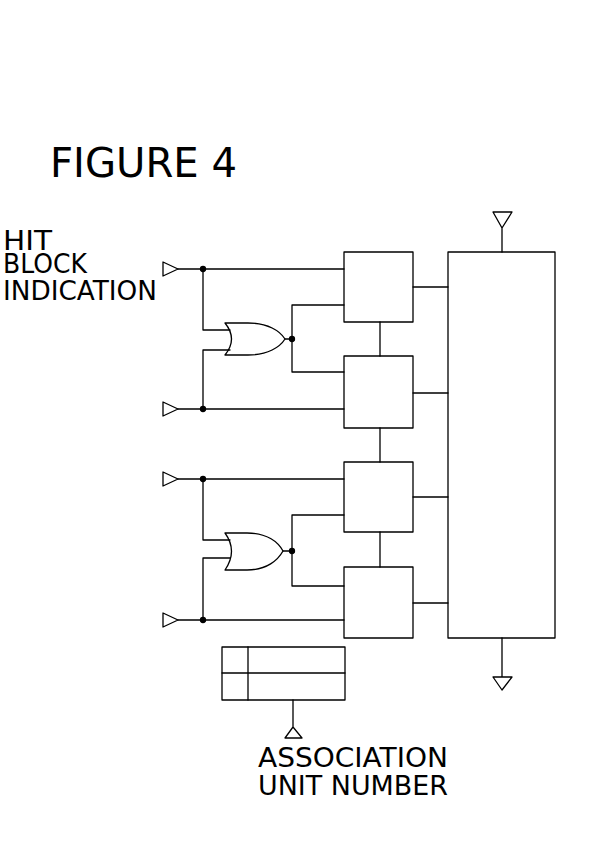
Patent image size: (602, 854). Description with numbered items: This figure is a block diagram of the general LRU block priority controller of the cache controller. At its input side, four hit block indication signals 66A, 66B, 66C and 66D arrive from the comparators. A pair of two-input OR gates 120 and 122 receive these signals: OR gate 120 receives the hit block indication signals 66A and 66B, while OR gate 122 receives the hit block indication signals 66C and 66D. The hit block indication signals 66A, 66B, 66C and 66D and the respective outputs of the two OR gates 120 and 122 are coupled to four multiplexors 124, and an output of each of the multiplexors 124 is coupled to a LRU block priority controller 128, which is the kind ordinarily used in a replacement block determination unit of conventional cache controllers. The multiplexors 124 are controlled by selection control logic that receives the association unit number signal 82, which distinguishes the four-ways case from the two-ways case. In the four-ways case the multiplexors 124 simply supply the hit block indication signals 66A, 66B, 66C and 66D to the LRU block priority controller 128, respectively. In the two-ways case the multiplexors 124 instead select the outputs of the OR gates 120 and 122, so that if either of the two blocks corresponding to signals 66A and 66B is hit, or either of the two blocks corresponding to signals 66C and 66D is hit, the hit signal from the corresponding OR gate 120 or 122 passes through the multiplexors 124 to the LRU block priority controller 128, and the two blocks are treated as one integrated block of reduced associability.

The hit block indication signal 66A is at (190, 269).
The hit block indication signal 66B is at (189, 409).
The hit block indication signal 66C is at (190, 479).
The hit block indication signal 66D is at (190, 620).
The two-input OR gate 120 is at (258, 355).
The two-input OR gate 122 is at (248, 533).
The multiplexor 124 is at (388, 252).
The LRU block priority controller 128 is at (540, 252).
The association unit number signal 82 is at (290, 700).